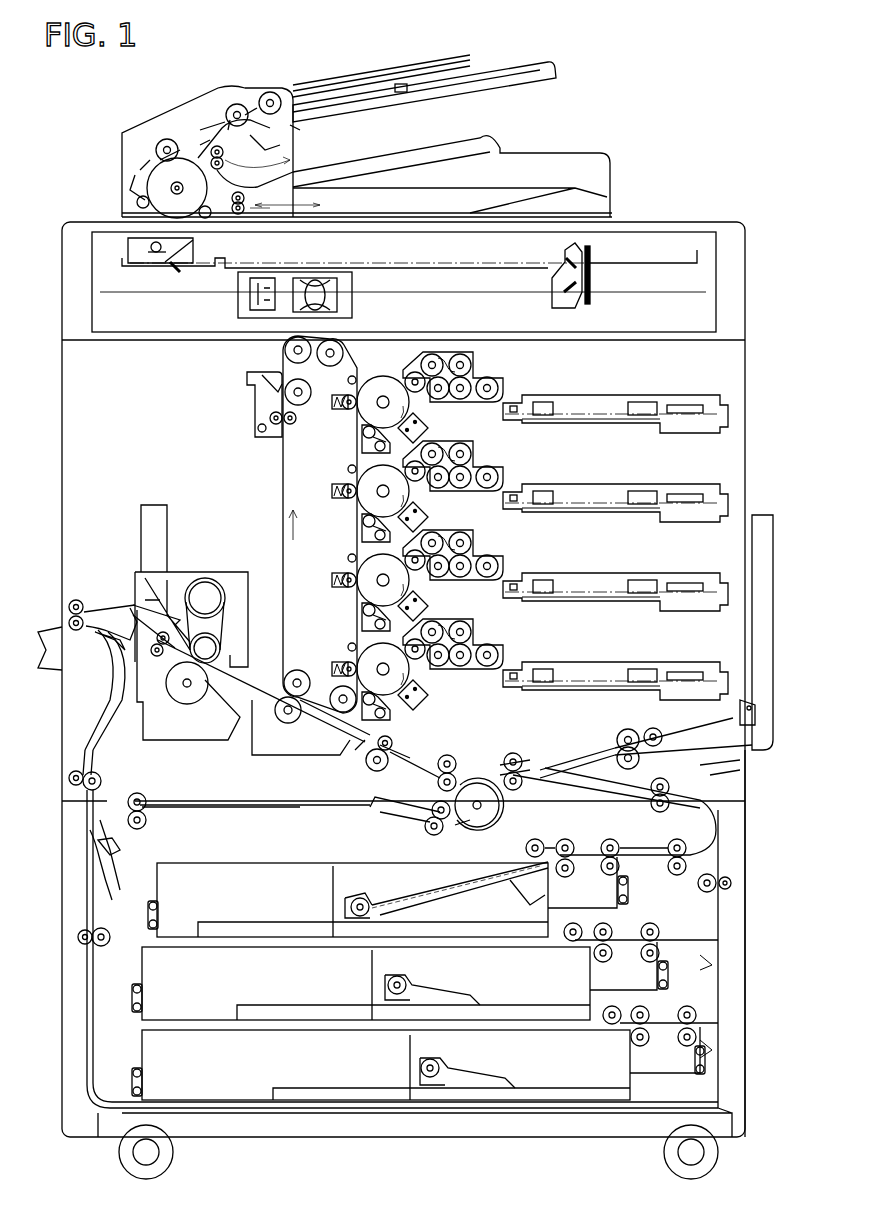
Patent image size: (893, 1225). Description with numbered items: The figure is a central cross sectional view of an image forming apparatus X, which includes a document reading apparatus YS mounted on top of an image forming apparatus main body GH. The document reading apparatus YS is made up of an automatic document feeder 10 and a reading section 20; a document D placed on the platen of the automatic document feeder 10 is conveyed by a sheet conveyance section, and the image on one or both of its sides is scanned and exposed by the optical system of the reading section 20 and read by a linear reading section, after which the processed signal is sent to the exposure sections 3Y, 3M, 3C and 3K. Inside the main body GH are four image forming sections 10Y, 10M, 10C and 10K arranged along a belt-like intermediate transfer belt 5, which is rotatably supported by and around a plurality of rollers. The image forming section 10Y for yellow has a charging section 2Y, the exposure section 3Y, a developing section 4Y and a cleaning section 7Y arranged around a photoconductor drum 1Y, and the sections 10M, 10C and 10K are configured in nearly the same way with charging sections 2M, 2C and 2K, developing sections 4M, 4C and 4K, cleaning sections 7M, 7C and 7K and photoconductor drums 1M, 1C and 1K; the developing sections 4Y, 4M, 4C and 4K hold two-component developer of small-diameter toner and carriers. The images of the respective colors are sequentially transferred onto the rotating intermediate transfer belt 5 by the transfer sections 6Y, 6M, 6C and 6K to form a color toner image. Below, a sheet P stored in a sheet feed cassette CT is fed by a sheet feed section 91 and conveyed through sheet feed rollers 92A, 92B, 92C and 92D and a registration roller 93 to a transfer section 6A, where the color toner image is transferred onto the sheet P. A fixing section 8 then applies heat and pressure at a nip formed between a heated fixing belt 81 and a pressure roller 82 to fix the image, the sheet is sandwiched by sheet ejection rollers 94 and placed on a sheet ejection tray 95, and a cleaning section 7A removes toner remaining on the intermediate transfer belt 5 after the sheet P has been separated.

The image forming apparatus X is at (397, 610).
The automatic document feeder 10 is at (367, 129).
The document D is at (398, 95).
The document reading apparatus YS is at (650, 173).
The reading section 20 is at (403, 222).
The image forming apparatus main body GH is at (88, 352).
The intermediate transfer belt 5 is at (280, 456).
The cleaning section 7A is at (258, 408).
The photoconductor drum 1Y is at (380, 386).
The photoconductor drum 1M is at (352, 485).
The photoconductor drum 1C is at (352, 577).
The photoconductor drum 1K is at (366, 659).
The charging section 2Y is at (433, 424).
The charging section 2M is at (435, 514).
The charging section 2C is at (432, 605).
The charging section 2K is at (441, 694).
The exposure section 3Y is at (615, 433).
The exposure section 3M is at (615, 522).
The exposure section 3C is at (615, 572).
The exposure section 3K is at (615, 659).
The developing section 4Y is at (443, 369).
The developing section 4M is at (453, 451).
The developing section 4C is at (453, 542).
The developing section 4K is at (453, 630).
The transfer section 6Y is at (328, 404).
The transfer section 6M is at (328, 496).
The transfer section 6C is at (324, 578).
The transfer section 6K is at (324, 656).
The cleaning section 7Y is at (353, 440).
The cleaning section 7M is at (349, 531).
The cleaning section 7C is at (353, 615).
The cleaning section 7K is at (410, 711).
The image forming section 10Y is at (525, 356).
The image forming section 10M is at (544, 447).
The image forming section 10C is at (540, 537).
The image forming section 10K is at (542, 632).
The transfer section 6A is at (311, 727).
The fixing section 8 is at (249, 620).
The fixing belt 81 is at (228, 595).
The pressure roller 82 is at (188, 705).
The registration roller 93 is at (368, 768).
The sheet ejection rollers 94 is at (80, 598).
The sheet ejection tray 95 is at (40, 628).
The sheet feed section 91 is at (602, 845).
The sheet feed roller 92A is at (672, 840).
The sheet feed roller 92B is at (650, 803).
The sheet feed roller 92C is at (521, 786).
The sheet feed roller 92D is at (453, 762).
The sheet P is at (465, 826).
The sheet feed cassette CT is at (230, 862).